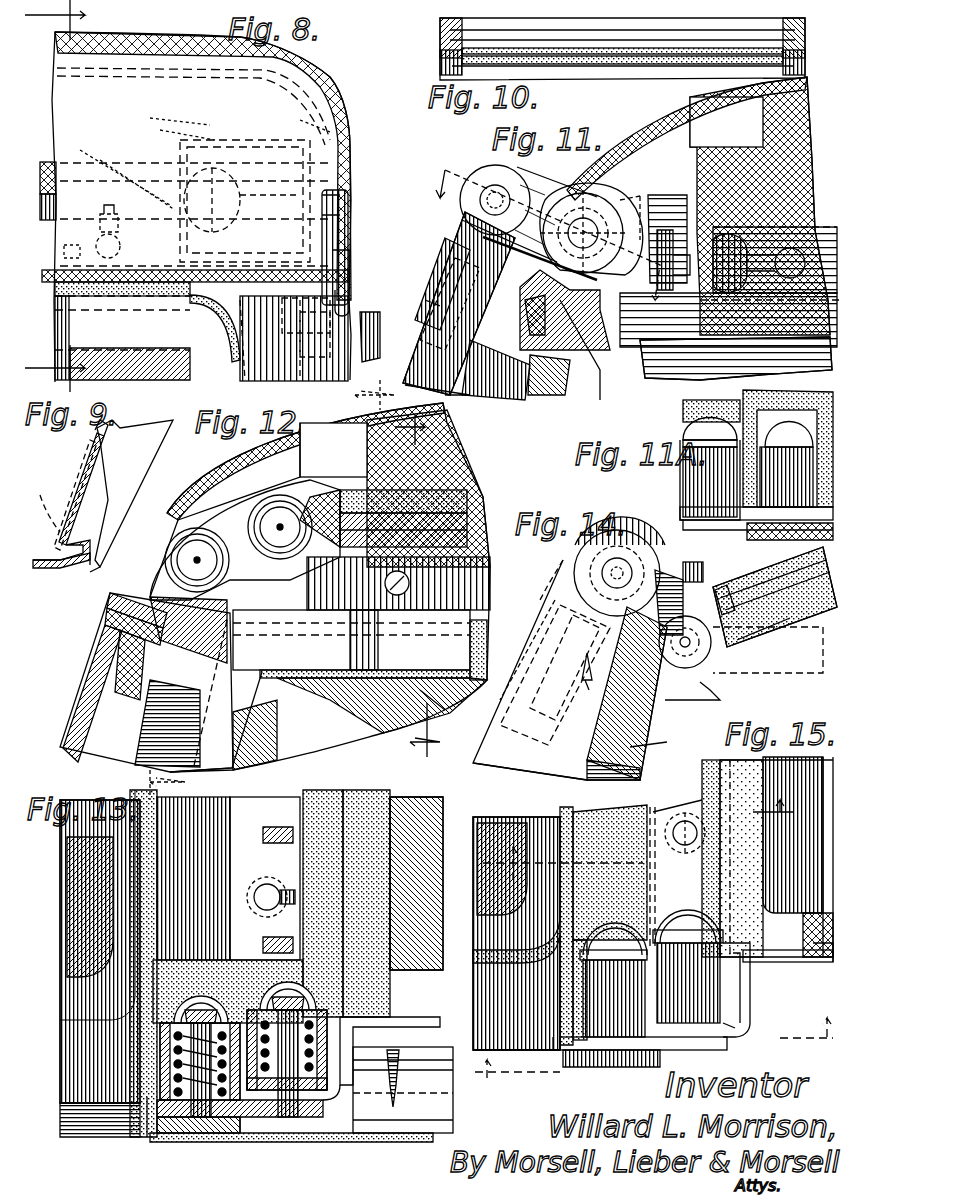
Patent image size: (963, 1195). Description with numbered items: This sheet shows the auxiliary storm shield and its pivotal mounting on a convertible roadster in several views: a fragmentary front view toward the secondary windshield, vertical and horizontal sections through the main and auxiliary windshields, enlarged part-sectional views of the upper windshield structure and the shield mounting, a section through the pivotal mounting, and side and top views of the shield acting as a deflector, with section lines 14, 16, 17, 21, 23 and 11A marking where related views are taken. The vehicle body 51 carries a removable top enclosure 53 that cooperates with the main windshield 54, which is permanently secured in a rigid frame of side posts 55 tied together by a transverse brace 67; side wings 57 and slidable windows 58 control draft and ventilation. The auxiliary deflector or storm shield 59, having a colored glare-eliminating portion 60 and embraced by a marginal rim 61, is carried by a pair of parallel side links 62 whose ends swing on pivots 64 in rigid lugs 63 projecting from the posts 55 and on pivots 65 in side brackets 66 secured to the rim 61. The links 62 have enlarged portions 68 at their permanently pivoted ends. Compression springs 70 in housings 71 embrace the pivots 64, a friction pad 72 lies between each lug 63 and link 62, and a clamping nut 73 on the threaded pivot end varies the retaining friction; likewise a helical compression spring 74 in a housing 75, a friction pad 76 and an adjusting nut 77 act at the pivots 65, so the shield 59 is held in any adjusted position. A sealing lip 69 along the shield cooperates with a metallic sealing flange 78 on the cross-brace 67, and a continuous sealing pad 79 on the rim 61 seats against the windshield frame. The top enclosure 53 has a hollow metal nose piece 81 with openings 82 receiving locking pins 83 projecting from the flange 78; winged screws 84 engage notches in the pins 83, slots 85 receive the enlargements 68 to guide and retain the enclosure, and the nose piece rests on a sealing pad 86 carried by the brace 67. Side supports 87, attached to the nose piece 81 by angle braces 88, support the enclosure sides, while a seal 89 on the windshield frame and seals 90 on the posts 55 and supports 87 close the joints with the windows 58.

In FIG. 15, the section line 14 is at (654, 1063).
In FIG. 12, the section line 16 is at (423, 592).
In FIG. 12, the section line 17 is at (272, 586).
In FIG. 8, the section line 21 is at (45, 196).
In FIG. 15, the section line 23 is at (646, 840).
In FIG. 10, the body 51 is at (598, 76).
In FIG. 9, the body 51 is at (42, 568).
In FIG. 8, the top enclosure 53 is at (305, 78).
In FIG. 11, the top enclosure 53 is at (762, 122).
In FIG. 9, the top enclosure 53 is at (142, 430).
In FIG. 12, the top enclosure 53 is at (465, 460).
In FIG. 8, the main windshield 54 is at (146, 372).
In FIG. 10, the main windshield 54 is at (660, 54).
In FIG. 11, the main windshield 54 is at (495, 360).
In FIG. 9, the main windshield 54 is at (92, 490).
In FIG. 12, the main windshield 54 is at (98, 700).
In FIG. 14, the main windshield 54 is at (535, 708).
In FIG. 15, the main windshield 54 is at (515, 820).
In FIG. 13, the main windshield 54 is at (80, 920).
In FIG. 8, the side posts 55 is at (335, 372).
In FIG. 10, the side posts 55 is at (445, 58).
In FIG. 12, the side posts 55 is at (174, 695).
In FIG. 14, the side posts 55 is at (530, 756).
In FIG. 15, the side posts 55 is at (516, 1022).
In FIG. 13, the side posts 55 is at (80, 1137).
In FIG. 8, the side wings 57 is at (372, 312).
In FIG. 8, the windows 58 is at (300, 365).
In FIG. 10, the windows 58 is at (445, 30).
In FIG. 11, the windows 58 is at (740, 365).
In FIG. 12, the windows 58 is at (242, 722).
In FIG. 10, the auxiliary deflector or storm shield 59 is at (560, 55).
In FIG. 11, the auxiliary deflector or storm shield 59 is at (445, 272).
In FIG. 9, the auxiliary deflector or storm shield 59 is at (68, 495).
In FIG. 12, the auxiliary deflector or storm shield 59 is at (440, 520).
In FIG. 11A, the auxiliary deflector or storm shield 59 is at (695, 398).
In FIG. 13, the auxiliary deflector or storm shield 59 is at (414, 795).
In FIG. 9, the colored portion 60 is at (97, 440).
In FIG. 15, the colored portion 60 is at (775, 772).
In FIG. 11, the marginal rim 61 is at (437, 388).
In FIG. 12, the marginal rim 61 is at (414, 555).
In FIG. 15, the marginal rim 61 is at (820, 963).
In FIG. 11, the side links 62 is at (462, 208).
In FIG. 12, the side links 62 is at (240, 518).
In FIG. 11A, the side links 62 is at (683, 522).
In FIG. 14, the side links 62 is at (674, 682).
In FIG. 15, the side links 62 is at (625, 1052).
In FIG. 13, the side links 62 is at (273, 1120).
In FIG. 11, the rigid lugs 63 is at (586, 210).
In FIG. 11A, the rigid lugs 63 is at (805, 512).
In FIG. 15, the rigid lugs 63 is at (580, 1067).
In FIG. 13, the rigid lugs 63 is at (165, 1135).
In FIG. 11, the pivots 64 is at (528, 220).
In FIG. 14, the pivots 64 is at (643, 569).
In FIG. 13, the pivots 64 is at (200, 1130).
In FIG. 11, the pivots 65 is at (652, 234).
In FIG. 14, the pivots 65 is at (712, 650).
In FIG. 13, the pivots 65 is at (290, 1130).
In FIG. 11A, the side brackets 66 is at (682, 505).
In FIG. 14, the side brackets 66 is at (770, 630).
In FIG. 15, the side brackets 66 is at (750, 990).
In FIG. 13, the side brackets 66 is at (367, 1027).
In FIG. 8, the transverse brace 67 is at (132, 290).
In FIG. 12, the transverse brace 67 is at (112, 597).
In FIG. 14, the transverse brace 67 is at (556, 578).
In FIG. 8, the enlarged portions 68 is at (335, 224).
In FIG. 11, the enlarged portions 68 is at (565, 310).
In FIG. 9, the enlarged portions 68 is at (143, 555).
In FIG. 12, the enlarged portions 68 is at (147, 553).
In FIG. 14, the enlarged portions 68 is at (658, 522).
In FIG. 8, the sealing lip 69 is at (56, 198).
In FIG. 11, the sealing lip 69 is at (450, 243).
In FIG. 12, the sealing lip 69 is at (340, 560).
In FIG. 14, the sealing lip 69 is at (722, 590).
In FIG. 15, the sealing lip 69 is at (702, 766).
In FIG. 13, the sealing lip 69 is at (318, 790).
In FIG. 13, the compression springs 70 is at (175, 1078).
In FIG. 11A, the housings 71 is at (788, 448).
In FIG. 15, the housings 71 is at (613, 980).
In FIG. 13, the housings 71 is at (165, 1052).
In FIG. 15, the friction pad 72 is at (668, 1050).
In FIG. 13, the friction pad 72 is at (157, 1107).
In FIG. 13, the clamping nut 73 is at (210, 990).
In FIG. 13, the helical compression spring 74 is at (330, 1095).
In FIG. 11A, the housing 75 is at (710, 468).
In FIG. 15, the housing 75 is at (688, 966).
In FIG. 13, the housing 75 is at (330, 1065).
In FIG. 15, the friction pad 76 is at (735, 1038).
In FIG. 13, the friction pad 76 is at (317, 1117).
In FIG. 13, the adjusting nuts 77 is at (285, 975).
In FIG. 11, the metallic sealing flange 78 is at (728, 320).
In FIG. 14, the metallic sealing flange 78 is at (704, 688).
In FIG. 15, the metallic sealing flange 78 is at (690, 812).
In FIG. 8, the continuous sealing pad 79 is at (50, 162).
In FIG. 12, the continuous sealing pad 79 is at (405, 480).
In FIG. 14, the continuous sealing pad 79 is at (790, 575).
In FIG. 15, the continuous sealing pad 79 is at (760, 960).
In FIG. 13, the continuous sealing pad 79 is at (368, 782).
In FIG. 8, the hollow metal nose piece 81 is at (168, 80).
In FIG. 11, the hollow metal nose piece 81 is at (648, 128).
In FIG. 12, the hollow metal nose piece 81 is at (262, 453).
In FIG. 13, the openings 82 is at (270, 910).
In FIG. 8, the locking pins 83 is at (118, 210).
In FIG. 11, the locking pins 83 is at (675, 240).
In FIG. 14, the locking pins 83 is at (700, 566).
In FIG. 15, the locking pins 83 is at (675, 845).
In FIG. 13, the locking pins 83 is at (266, 884).
In FIG. 8, the winged screws 84 is at (122, 244).
In FIG. 11, the winged screws 84 is at (759, 263).
In FIG. 13, the winged screws 84 is at (290, 895).
In FIG. 8, the slots 85 is at (348, 205).
In FIG. 8, the sealing pad 86 is at (78, 275).
In FIG. 11, the sealing pad 86 is at (572, 255).
In FIG. 12, the sealing pad 86 is at (247, 627).
In FIG. 15, the sealing pad 86 is at (615, 808).
In FIG. 13, the sealing pad 86 is at (180, 800).
In FIG. 12, the side supports 87 is at (367, 662).
In FIG. 13, the side supports 87 is at (390, 1142).
In FIG. 11, the angle braces 88 is at (782, 245).
In FIG. 12, the angle braces 88 is at (383, 623).
In FIG. 13, the angle braces 88 is at (403, 1090).
In FIG. 8, the seal 89 is at (210, 298).
In FIG. 11, the seal 89 is at (540, 355).
In FIG. 12, the seal 89 is at (108, 620).
In FIG. 14, the seal 89 is at (557, 675).
In FIG. 15, the seal 89 is at (560, 820).
In FIG. 13, the seal 89 is at (60, 1020).
In FIG. 8, the seals 90 is at (345, 286).
In FIG. 11, the seals 90 is at (581, 358).
In FIG. 12, the seals 90 is at (437, 715).
In FIG. 14, the seals 90 is at (662, 743).
In FIG. 11, the section view indicator 11A is at (552, 241).